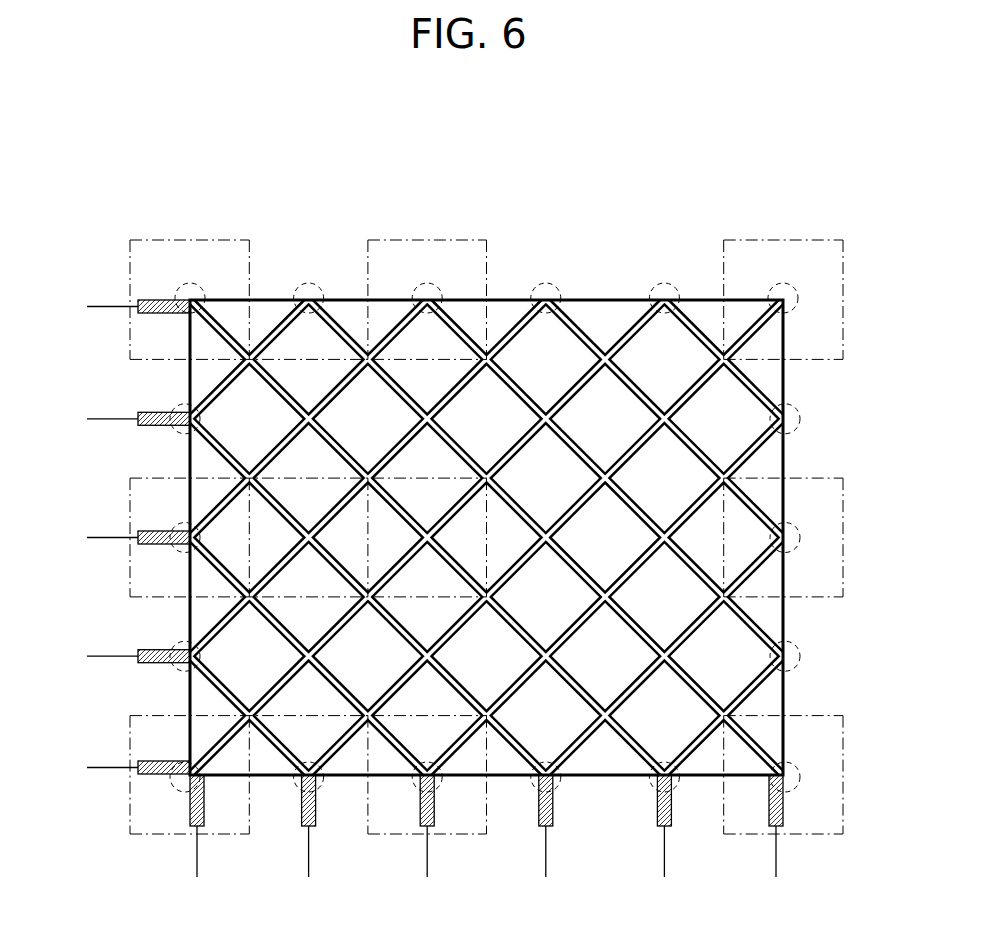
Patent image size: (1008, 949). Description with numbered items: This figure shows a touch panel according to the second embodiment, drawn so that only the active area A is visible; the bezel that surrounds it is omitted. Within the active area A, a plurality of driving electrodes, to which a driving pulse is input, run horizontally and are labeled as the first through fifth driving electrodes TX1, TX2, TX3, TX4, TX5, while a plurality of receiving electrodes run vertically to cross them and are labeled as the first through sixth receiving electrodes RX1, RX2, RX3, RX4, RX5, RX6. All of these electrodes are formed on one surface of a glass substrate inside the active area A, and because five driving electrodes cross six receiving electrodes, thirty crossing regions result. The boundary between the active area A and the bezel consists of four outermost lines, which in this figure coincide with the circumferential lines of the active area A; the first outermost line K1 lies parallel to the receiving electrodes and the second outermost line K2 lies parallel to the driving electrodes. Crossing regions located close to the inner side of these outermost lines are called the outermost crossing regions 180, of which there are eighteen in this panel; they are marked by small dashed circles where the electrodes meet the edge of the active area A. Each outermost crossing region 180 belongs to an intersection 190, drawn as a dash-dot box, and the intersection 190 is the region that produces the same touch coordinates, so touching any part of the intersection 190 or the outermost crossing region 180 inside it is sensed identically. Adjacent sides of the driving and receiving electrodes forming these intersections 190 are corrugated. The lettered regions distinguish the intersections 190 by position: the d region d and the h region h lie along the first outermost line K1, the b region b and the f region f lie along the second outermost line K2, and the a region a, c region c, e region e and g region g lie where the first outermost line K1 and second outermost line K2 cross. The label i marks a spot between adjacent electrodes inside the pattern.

The outermost crossing region 180 is at (176, 287).
The intersection 190 is at (251, 240).
The first outermost line K1 is at (188, 680).
The second outermost line K2 is at (610, 298).
The active area A is at (786, 452).
The gap between electrodes i is at (489, 562).
The a region a is at (209, 240).
The b region b is at (446, 240).
The c region c is at (804, 240).
The d region d is at (843, 577).
The e region e is at (843, 814).
The f region f is at (487, 834).
The g region g is at (249, 834).
The h region h is at (130, 578).
The first driving electrode TX1 is at (117, 306).
The second driving electrode TX2 is at (117, 418).
The third driving electrode TX3 is at (117, 537).
The fourth driving electrode TX4 is at (117, 656).
The fifth driving electrode TX5 is at (117, 767).
The first receiving electrode RX1 is at (197, 840).
The second receiving electrode RX2 is at (311, 840).
The third receiving electrode RX3 is at (429, 840).
The fourth receiving electrode RX4 is at (548, 840).
The fifth receiving electrode RX5 is at (666, 840).
The sixth receiving electrode RX6 is at (778, 840).